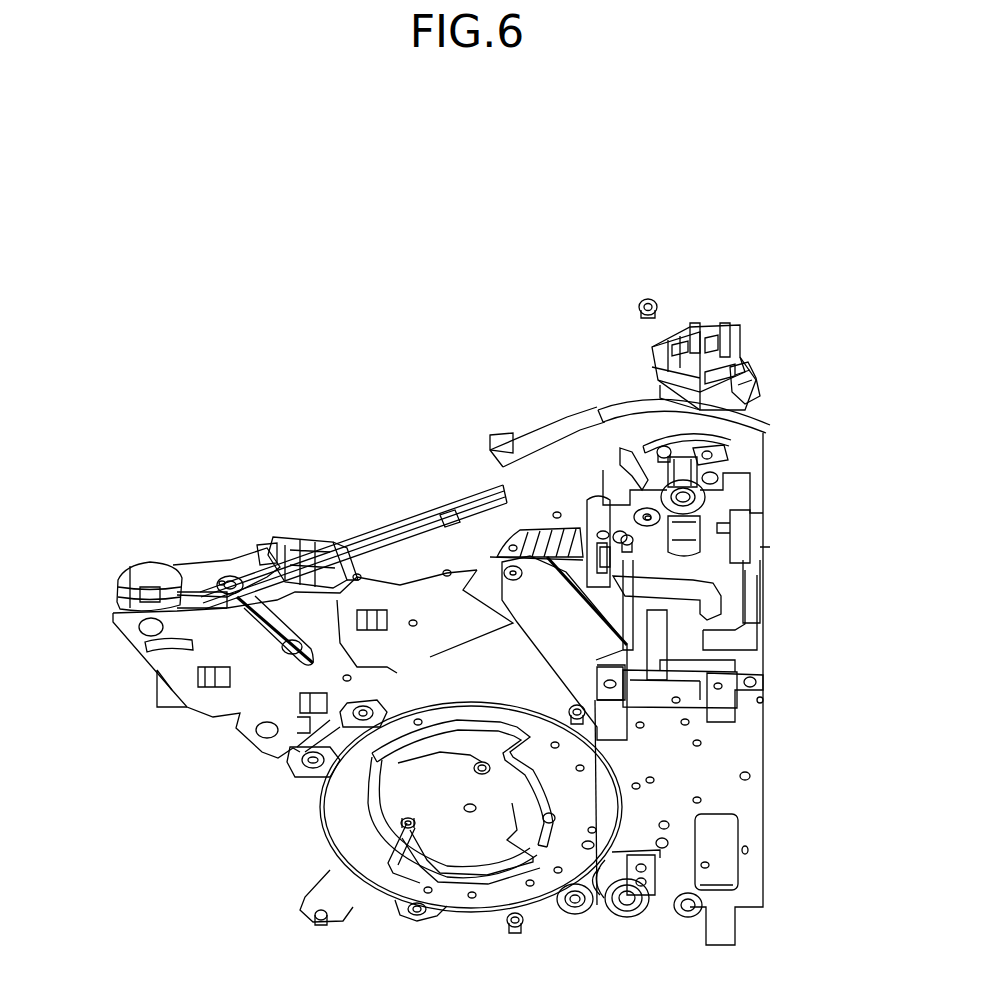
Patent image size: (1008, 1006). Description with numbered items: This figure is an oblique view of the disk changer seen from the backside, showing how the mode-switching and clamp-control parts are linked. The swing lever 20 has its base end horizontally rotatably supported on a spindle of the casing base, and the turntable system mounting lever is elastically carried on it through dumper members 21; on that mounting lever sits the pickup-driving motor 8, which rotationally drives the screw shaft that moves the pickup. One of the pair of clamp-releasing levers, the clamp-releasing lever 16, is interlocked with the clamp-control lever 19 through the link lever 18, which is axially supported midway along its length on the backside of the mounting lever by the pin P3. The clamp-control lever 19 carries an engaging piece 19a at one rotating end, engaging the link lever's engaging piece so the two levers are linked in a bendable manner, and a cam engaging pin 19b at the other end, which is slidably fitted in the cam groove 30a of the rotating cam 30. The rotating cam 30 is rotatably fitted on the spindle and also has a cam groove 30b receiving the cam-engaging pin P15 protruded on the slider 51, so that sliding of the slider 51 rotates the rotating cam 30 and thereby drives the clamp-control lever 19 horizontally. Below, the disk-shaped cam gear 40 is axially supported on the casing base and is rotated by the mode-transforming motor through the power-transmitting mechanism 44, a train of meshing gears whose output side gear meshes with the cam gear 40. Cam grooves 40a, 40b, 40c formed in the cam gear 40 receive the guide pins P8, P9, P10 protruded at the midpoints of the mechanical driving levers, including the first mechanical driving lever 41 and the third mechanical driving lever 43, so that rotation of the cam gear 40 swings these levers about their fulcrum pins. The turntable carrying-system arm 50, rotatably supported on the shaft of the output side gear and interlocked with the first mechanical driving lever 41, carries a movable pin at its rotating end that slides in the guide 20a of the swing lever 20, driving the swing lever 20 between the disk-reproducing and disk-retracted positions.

The pickup-driving motor 8 is at (660, 352).
The clamp-releasing lever 16 is at (307, 540).
The link lever 18 is at (253, 570).
The clamp-control lever 19 is at (443, 536).
The engaging piece 19a is at (267, 543).
The cam engaging pin 19b is at (724, 443).
The swing lever 20 is at (227, 692).
The guide 20a is at (523, 533).
The dumper member 21 is at (132, 575).
The rotating cam 30 is at (751, 446).
The cam groove 30a is at (750, 382).
The cam groove 30b is at (613, 438).
The cam gear 40 is at (308, 857).
The cam groove 40a is at (482, 724).
The cam groove 40b is at (377, 806).
The cam groove 40c is at (487, 873).
The first mechanical driving lever 41 is at (423, 917).
The third mechanical driving lever 43 is at (343, 900).
The power-transmitting mechanism 44 is at (670, 920).
The turntable carrying-system arm 50 is at (545, 640).
The slider 51 is at (742, 601).
The pin P3 is at (220, 580).
The guide pin P8 is at (556, 817).
The guide pin P9 is at (479, 772).
The guide pin P10 is at (414, 824).
The cam-engaging pin P15 is at (652, 518).